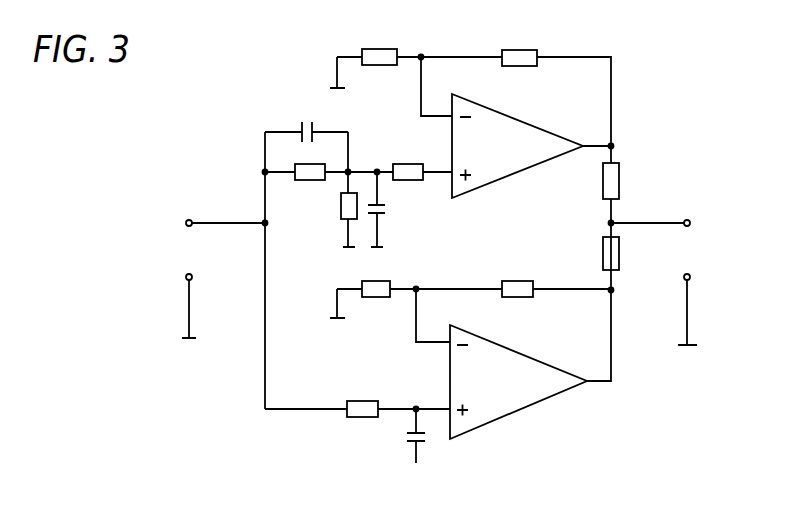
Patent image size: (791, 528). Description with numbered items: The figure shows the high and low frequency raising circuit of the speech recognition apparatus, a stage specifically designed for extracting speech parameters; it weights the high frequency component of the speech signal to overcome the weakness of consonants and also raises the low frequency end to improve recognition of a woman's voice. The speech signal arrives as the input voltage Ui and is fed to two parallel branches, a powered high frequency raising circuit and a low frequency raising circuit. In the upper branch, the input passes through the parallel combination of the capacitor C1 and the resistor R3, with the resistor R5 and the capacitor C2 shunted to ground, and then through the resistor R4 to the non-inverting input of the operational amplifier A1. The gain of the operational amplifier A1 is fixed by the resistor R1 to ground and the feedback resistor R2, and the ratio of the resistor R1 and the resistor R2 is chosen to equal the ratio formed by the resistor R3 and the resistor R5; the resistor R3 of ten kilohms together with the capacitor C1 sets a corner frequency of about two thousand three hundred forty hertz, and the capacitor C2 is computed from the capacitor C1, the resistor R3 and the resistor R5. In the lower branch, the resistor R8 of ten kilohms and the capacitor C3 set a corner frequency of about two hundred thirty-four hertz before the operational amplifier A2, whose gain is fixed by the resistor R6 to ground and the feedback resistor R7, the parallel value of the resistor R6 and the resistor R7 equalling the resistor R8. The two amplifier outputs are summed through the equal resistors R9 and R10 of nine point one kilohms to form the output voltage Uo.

The resistor R1 is at (375, 53).
The resistor R2 is at (516, 83).
The resistor R3 is at (306, 187).
The resistor R4 is at (400, 157).
The resistor R5 is at (325, 189).
The resistor R6 is at (373, 285).
The resistor R7 is at (513, 274).
The resistor R8 is at (357, 394).
The resistor R9 is at (627, 191).
The resistor R10 is at (630, 263).
The capacitor C1 is at (306, 118).
The capacitor C2 is at (390, 209).
The capacitor C3 is at (395, 436).
The operational amplifier A1 is at (531, 146).
The operational amplifier A2 is at (530, 364).
The input voltage Ui is at (181, 222).
The output voltage Uo is at (691, 229).